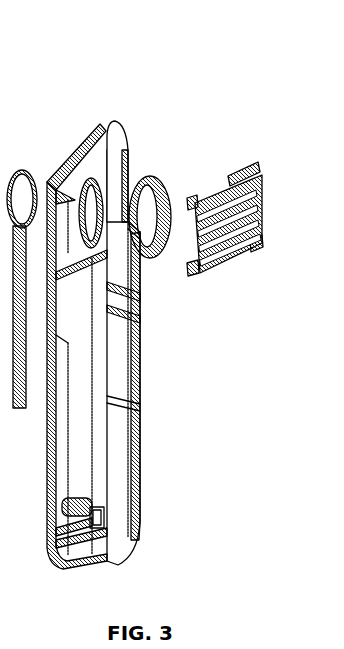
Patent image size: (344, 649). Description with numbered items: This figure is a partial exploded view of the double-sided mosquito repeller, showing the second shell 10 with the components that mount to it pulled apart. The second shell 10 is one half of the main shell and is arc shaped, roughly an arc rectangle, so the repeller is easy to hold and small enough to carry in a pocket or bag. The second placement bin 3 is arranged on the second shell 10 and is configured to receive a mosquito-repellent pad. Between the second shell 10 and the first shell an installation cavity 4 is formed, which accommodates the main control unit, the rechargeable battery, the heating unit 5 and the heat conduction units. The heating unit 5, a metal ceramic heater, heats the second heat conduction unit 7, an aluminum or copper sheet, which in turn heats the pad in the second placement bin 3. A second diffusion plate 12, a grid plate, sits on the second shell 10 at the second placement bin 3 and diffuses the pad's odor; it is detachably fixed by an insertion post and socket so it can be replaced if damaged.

The second placement bin 3 is at (137, 173).
The installation cavity 4 is at (84, 388).
The heating unit 5 is at (23, 180).
The second heat conduction unit 7 is at (167, 188).
The second shell 10 is at (113, 137).
The second diffusion plate 12 is at (228, 262).